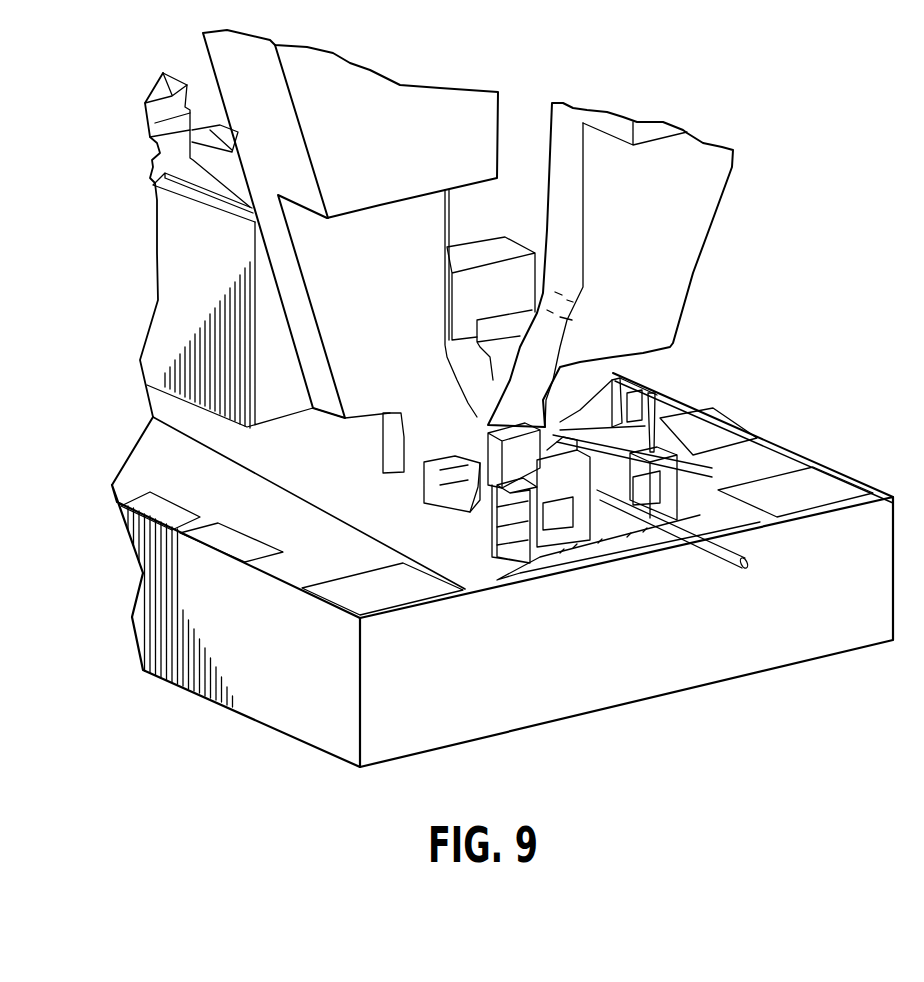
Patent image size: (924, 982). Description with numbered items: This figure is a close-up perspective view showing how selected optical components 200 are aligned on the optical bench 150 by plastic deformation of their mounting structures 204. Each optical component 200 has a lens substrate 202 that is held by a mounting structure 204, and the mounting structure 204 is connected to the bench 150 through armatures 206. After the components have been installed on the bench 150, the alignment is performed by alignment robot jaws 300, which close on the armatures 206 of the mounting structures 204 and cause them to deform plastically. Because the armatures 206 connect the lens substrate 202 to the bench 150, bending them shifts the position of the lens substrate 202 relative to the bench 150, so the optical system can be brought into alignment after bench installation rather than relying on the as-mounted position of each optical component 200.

The bench 150 is at (648, 646).
The optical components 200 is at (457, 530).
The lens substrate 202 is at (497, 480).
The mounting structures 204 is at (420, 468).
The armatures 206 is at (475, 500).
The alignment robot jaws 300 is at (663, 273).